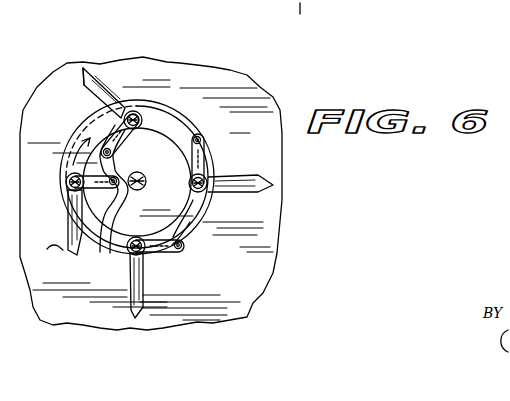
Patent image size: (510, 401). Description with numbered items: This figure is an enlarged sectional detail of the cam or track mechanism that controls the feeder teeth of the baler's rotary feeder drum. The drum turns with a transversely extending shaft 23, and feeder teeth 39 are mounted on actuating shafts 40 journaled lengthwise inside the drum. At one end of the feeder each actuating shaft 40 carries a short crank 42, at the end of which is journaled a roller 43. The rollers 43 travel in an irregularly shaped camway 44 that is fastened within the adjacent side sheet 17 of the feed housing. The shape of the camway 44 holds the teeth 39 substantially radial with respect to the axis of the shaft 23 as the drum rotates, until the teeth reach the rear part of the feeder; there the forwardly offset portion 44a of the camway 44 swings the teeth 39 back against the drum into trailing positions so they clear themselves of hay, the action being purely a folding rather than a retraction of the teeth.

The side sheet 17 is at (272, 204).
The transversely extending shaft 23 is at (168, 170).
The feeder teeth 39 is at (95, 85).
The actuating shafts 40 is at (140, 112).
The short cranks 42 is at (107, 125).
The rollers 43 is at (113, 153).
The camway 44 is at (192, 236).
The forwardly offset portion 44a is at (111, 236).